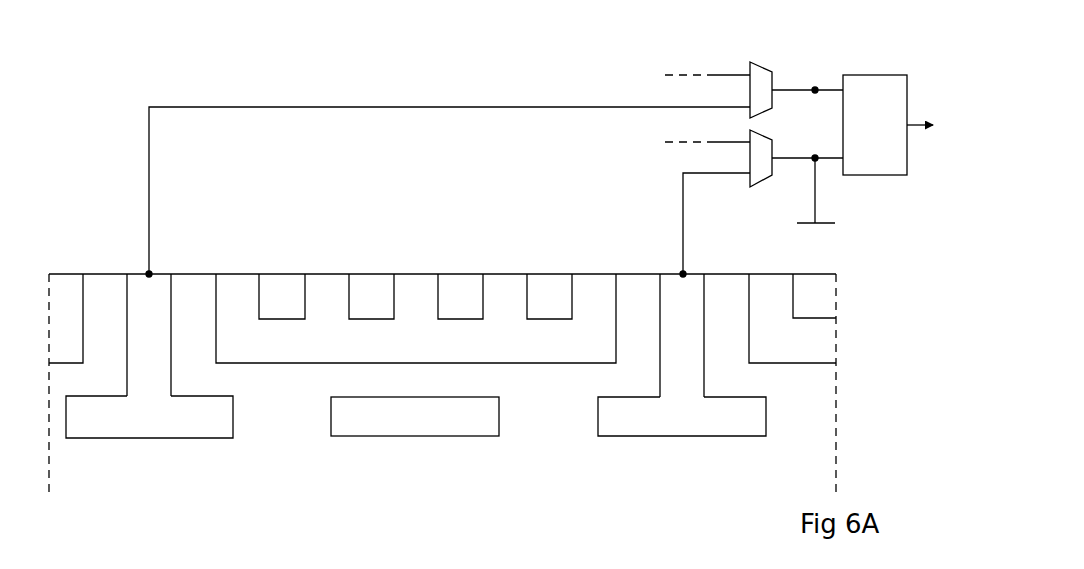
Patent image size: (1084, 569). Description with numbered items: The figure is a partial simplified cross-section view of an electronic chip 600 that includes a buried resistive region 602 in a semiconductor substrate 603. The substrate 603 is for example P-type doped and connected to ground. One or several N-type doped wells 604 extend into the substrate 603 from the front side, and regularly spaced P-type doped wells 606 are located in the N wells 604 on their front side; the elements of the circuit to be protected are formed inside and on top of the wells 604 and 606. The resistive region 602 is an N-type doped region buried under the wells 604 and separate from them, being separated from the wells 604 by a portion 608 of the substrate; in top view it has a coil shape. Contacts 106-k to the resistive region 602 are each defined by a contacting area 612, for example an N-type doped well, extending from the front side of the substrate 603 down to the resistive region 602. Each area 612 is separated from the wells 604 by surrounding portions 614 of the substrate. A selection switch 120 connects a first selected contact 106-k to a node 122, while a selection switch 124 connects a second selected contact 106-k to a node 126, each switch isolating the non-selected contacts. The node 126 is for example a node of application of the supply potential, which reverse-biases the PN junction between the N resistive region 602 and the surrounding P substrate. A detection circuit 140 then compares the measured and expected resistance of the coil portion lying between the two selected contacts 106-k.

The electronic chip 600 is at (118, 455).
The resistive region 602 is at (133, 426).
The substrate 603 is at (383, 504).
The N-type doped wells 604 is at (67, 283).
The P-type doped wells 606 is at (380, 283).
The substrate portion 608 is at (349, 379).
The contacting area 612 is at (138, 283).
The substrate portions 614 is at (196, 378).
The contacts 106-k is at (156, 266).
The selection switch 120 is at (762, 80).
The node 122 is at (815, 87).
The selection switch 124 is at (762, 175).
The node 126 is at (815, 155).
The detection circuit 140 is at (873, 76).